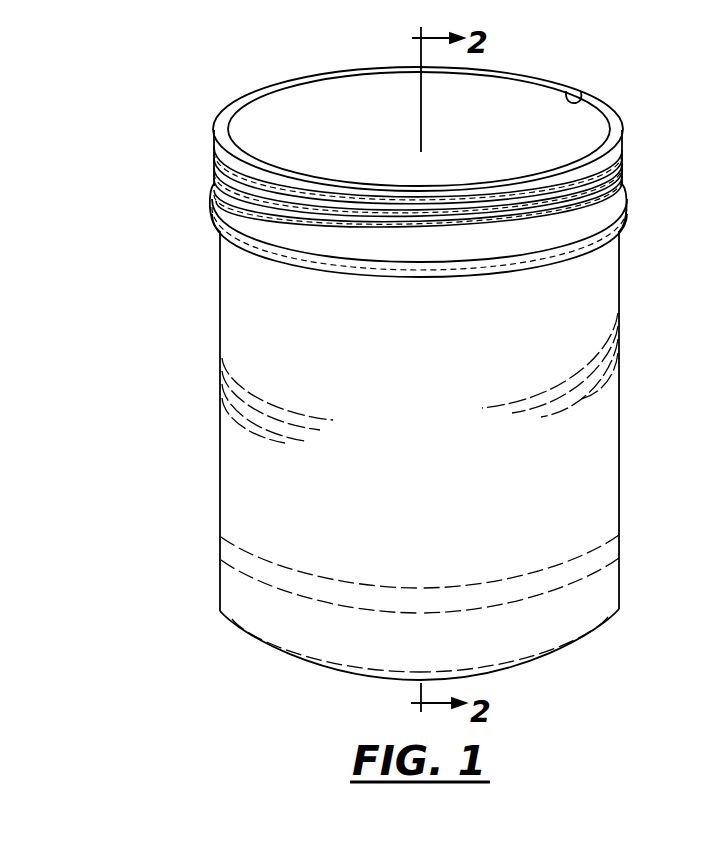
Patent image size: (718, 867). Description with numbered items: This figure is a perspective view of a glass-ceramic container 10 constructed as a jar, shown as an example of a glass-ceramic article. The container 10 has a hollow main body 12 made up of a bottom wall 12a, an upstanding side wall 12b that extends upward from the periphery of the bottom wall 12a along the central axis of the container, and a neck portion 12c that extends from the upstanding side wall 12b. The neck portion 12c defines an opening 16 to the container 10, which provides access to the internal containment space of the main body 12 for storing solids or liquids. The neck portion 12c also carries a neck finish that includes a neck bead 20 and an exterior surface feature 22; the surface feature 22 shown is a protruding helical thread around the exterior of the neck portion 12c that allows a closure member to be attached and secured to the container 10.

The glass-ceramic container 10 is at (160, 182).
The hollow main body 12 is at (244, 321).
The bottom wall 12a is at (316, 673).
The upstanding side wall 12b is at (221, 407).
The neck portion 12c is at (228, 120).
The opening 16 is at (572, 100).
The neck bead 20 is at (627, 205).
The exterior surface feature 22 is at (282, 188).